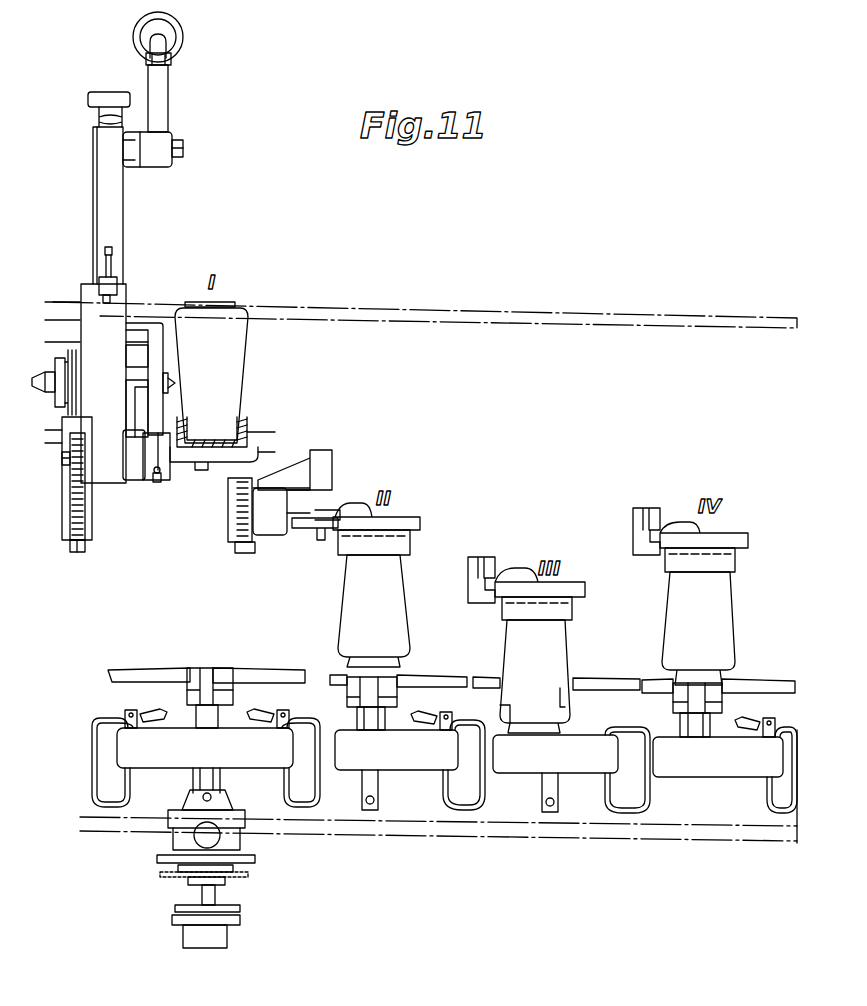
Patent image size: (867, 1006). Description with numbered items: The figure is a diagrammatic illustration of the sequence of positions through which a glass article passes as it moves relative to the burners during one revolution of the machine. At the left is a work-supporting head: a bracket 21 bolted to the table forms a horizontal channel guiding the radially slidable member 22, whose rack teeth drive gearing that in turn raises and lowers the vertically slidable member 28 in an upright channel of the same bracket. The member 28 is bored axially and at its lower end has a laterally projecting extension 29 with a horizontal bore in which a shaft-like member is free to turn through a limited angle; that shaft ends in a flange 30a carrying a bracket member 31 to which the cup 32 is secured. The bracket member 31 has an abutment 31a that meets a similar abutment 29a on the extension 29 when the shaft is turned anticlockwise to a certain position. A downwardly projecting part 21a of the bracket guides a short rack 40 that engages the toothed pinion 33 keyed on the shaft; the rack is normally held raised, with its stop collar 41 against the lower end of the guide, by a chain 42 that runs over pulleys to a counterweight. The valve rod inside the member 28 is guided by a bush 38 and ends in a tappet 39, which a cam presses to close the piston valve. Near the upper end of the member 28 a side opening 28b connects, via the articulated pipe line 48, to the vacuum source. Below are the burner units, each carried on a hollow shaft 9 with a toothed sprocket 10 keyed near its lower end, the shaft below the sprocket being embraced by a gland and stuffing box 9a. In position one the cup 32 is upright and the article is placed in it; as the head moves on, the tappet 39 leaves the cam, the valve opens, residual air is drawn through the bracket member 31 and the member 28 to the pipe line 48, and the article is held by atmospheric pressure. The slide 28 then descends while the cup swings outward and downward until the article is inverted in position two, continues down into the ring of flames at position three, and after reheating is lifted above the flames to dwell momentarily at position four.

The hollow shaft 9 is at (203, 892).
The gland and stuffing box 9a is at (183, 925).
The toothed sprocket 10 is at (180, 876).
The bracket 21 is at (122, 287).
The downwardly projecting part of bracket 21a is at (65, 495).
The radially slidable member 22 is at (133, 355).
The vertically slidable member 28 is at (107, 217).
The side opening 28b is at (135, 152).
The laterally projecting extension 29 is at (138, 452).
The abutment 29a is at (163, 477).
The flange 30a is at (157, 453).
The bracket member 31 is at (195, 462).
The abutment 31a is at (322, 510).
The cup 32 is at (250, 422).
The toothed pinion 33 is at (70, 467).
The bush 38 is at (110, 117).
The tappet 39 is at (101, 95).
The short rack 40 is at (75, 507).
The stop collar 41 is at (73, 550).
The chain 42 is at (65, 408).
The pipe line 48 is at (160, 93).